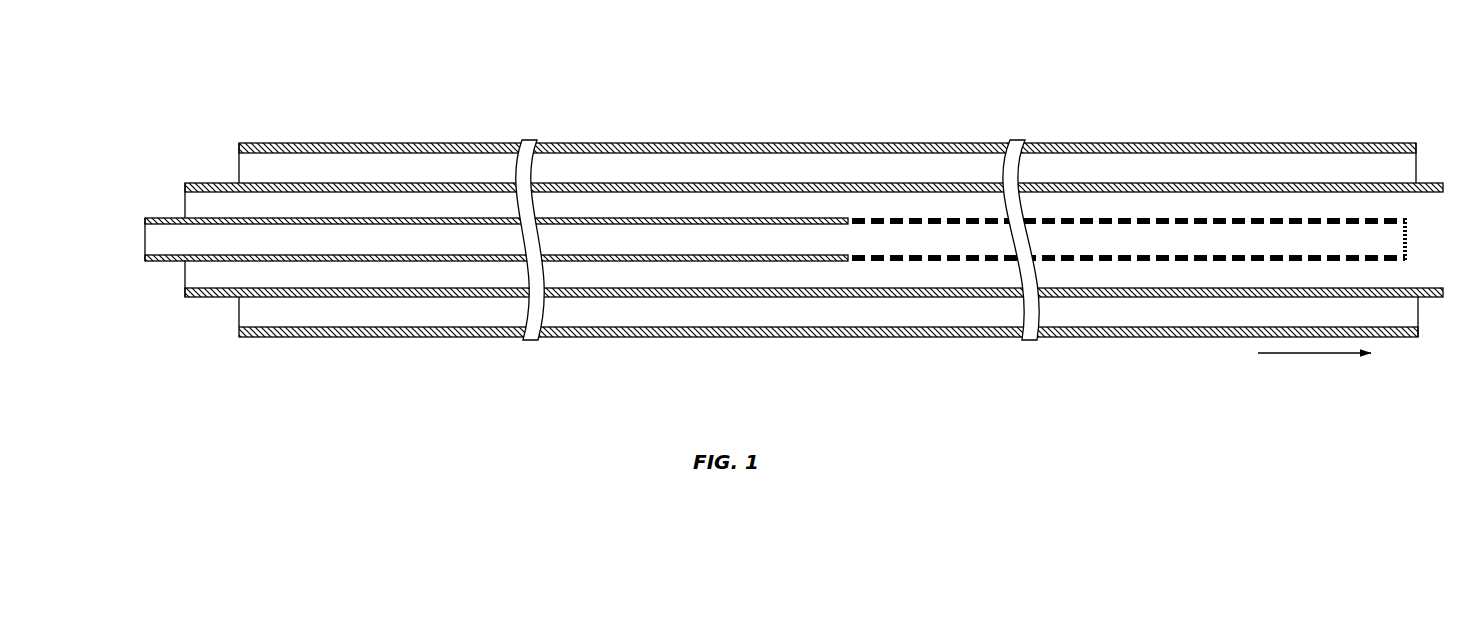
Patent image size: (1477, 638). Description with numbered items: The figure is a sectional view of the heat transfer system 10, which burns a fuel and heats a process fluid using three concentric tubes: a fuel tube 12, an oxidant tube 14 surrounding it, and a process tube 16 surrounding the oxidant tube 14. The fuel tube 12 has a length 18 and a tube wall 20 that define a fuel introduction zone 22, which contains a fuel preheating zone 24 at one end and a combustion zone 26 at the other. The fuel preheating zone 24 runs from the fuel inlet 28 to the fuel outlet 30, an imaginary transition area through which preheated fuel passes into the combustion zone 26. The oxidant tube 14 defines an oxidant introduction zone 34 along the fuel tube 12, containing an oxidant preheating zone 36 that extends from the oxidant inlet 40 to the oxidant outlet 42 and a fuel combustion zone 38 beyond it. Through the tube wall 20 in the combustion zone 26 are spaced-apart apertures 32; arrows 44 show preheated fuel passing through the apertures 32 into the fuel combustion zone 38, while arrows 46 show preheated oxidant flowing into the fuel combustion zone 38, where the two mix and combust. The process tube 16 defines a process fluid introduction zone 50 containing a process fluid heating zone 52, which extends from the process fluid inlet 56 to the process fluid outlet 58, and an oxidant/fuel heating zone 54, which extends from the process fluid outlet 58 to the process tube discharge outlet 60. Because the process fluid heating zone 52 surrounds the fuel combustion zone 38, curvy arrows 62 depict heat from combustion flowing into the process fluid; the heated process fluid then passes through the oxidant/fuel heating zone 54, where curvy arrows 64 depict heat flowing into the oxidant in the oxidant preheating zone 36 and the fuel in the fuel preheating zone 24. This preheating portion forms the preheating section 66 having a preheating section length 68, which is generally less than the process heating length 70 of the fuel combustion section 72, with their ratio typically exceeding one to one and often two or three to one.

The heat transfer system 10 is at (771, 77).
The fuel tube 12 is at (151, 262).
The oxidant tube 14 is at (185, 183).
The process tube 16 is at (241, 144).
The length 18 is at (152, 370).
The tube wall 20 is at (169, 264).
The fuel introduction zone 22 is at (676, 251).
The fuel preheating zone 24 is at (378, 251).
The combustion zone 26 is at (1048, 251).
The fuel inlet 28 is at (145, 237).
The fuel outlet 30 is at (846, 241).
The apertures 32 is at (896, 222).
The oxidant introduction zone 34 is at (676, 217).
The oxidant preheating zone 36 is at (378, 217).
The fuel combustion zone 38 is at (1048, 217).
The oxidant inlet 40 is at (185, 200).
The oxidant outlet 42 is at (829, 207).
The arrows 44 is at (845, 226).
The arrows 46 is at (815, 207).
The process fluid introduction zone 50 is at (676, 179).
The process fluid heating zone 52 is at (1048, 179).
The oxidant/fuel heating zone 54 is at (378, 179).
The process fluid inlet 56 is at (1416, 170).
The process fluid outlet 58 is at (777, 163).
The process tube discharge outlet 60 is at (239, 172).
The curvy arrows 62 is at (1126, 186).
The curvy arrows 64 is at (462, 200).
The preheating section 66 is at (853, 107).
The preheating section length 68 is at (848, 122).
The process heating length 70 is at (1370, 122).
The fuel combustion section 72 is at (863, 107).